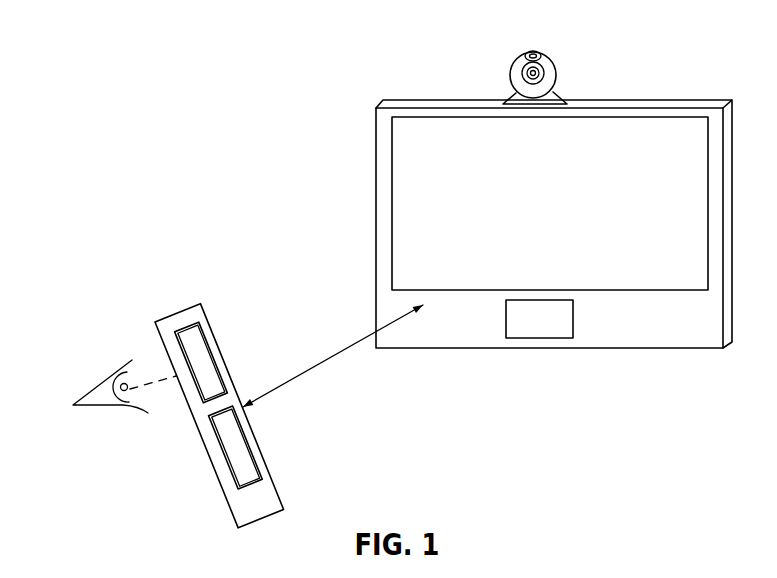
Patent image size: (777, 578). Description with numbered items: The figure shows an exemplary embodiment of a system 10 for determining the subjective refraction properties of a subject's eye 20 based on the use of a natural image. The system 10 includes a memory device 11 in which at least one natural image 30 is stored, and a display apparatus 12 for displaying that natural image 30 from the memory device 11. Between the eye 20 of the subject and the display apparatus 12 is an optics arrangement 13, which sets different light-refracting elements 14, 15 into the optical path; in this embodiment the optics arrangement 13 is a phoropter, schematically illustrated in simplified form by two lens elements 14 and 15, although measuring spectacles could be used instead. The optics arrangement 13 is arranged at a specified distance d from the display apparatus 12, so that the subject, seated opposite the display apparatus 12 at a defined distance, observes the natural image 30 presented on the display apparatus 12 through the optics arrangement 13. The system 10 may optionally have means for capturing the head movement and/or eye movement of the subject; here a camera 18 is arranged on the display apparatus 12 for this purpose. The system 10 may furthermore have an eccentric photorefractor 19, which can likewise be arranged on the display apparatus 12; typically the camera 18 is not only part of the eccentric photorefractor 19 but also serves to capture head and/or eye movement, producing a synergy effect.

The system 10 is at (203, 176).
The memory device 11 is at (540, 339).
The display apparatus 12 is at (450, 349).
The optics arrangement 13 is at (270, 482).
The light-refracting element 14 is at (184, 372).
The light-refracting element 15 is at (212, 457).
The camera 18 is at (588, 66).
The eccentric photorefractor 19 is at (556, 62).
The eye 20 is at (93, 385).
The natural image 30 is at (616, 264).